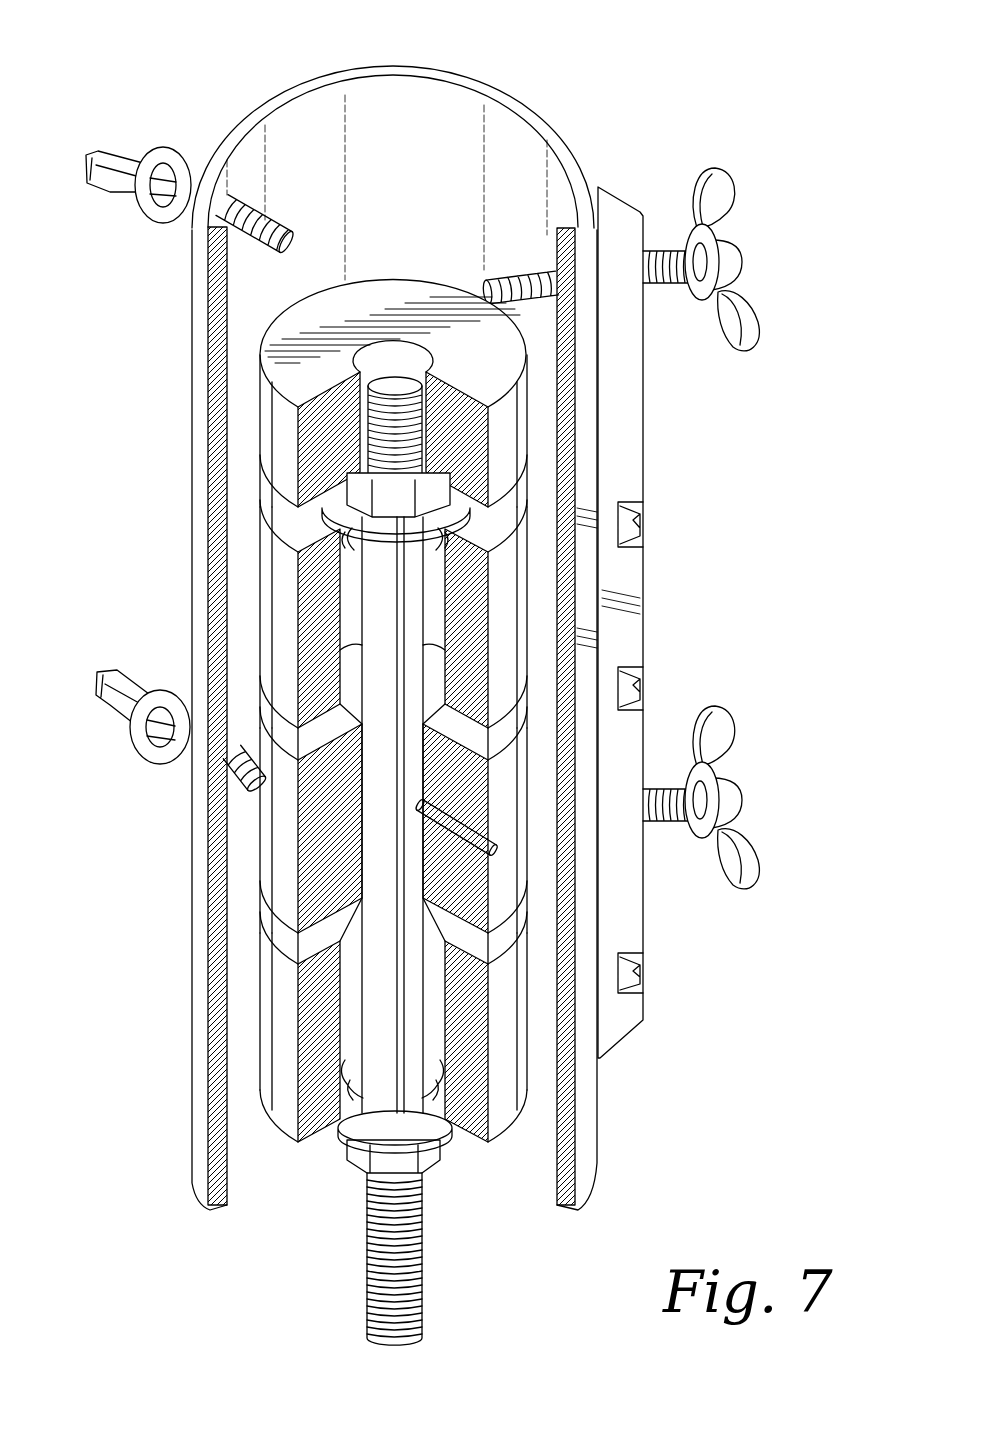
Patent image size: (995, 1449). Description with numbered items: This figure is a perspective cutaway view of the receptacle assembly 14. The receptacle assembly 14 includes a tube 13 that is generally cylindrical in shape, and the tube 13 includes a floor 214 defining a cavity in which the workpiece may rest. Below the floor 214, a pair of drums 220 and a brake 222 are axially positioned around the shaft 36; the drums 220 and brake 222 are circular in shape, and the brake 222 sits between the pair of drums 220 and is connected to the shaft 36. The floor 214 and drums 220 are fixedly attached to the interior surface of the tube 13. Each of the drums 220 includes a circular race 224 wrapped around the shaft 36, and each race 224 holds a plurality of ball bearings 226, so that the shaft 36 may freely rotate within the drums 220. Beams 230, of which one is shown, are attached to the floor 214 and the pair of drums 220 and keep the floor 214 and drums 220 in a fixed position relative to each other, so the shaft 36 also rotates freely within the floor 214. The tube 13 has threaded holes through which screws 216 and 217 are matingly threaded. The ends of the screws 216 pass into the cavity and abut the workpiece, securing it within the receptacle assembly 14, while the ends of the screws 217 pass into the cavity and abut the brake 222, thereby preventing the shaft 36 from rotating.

The receptacle assembly 14 is at (136, 76).
The tube 13 is at (428, 157).
The screws 216 is at (90, 200).
The screws 217 is at (108, 681).
The floor 214 is at (276, 441).
The circular race 224 is at (514, 462).
The ball bearings 226 is at (300, 527).
The beams 230 is at (540, 580).
The drums 220 is at (268, 622).
The brake 222 is at (268, 848).
The shaft 36 is at (413, 1280).